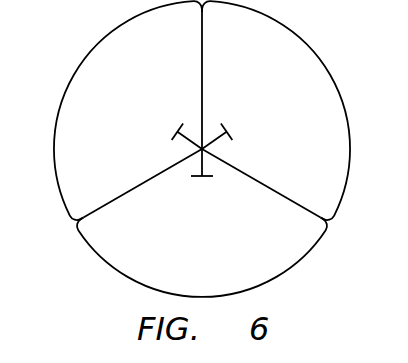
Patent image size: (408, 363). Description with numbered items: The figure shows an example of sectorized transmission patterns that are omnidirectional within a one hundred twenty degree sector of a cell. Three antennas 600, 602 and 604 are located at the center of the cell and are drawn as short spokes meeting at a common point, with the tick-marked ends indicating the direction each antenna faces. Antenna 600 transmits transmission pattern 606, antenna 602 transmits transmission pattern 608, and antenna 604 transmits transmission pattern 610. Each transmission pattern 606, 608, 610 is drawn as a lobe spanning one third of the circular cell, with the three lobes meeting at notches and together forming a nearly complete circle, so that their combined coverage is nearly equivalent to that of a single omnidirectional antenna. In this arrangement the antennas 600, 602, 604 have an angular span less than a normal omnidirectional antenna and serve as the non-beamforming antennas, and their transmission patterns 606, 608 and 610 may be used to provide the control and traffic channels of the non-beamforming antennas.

The antenna 600 is at (183, 128).
The antenna 602 is at (224, 128).
The antenna 604 is at (208, 178).
The transmission pattern 606 is at (93, 63).
The transmission pattern 608 is at (311, 63).
The transmission pattern 610 is at (304, 238).